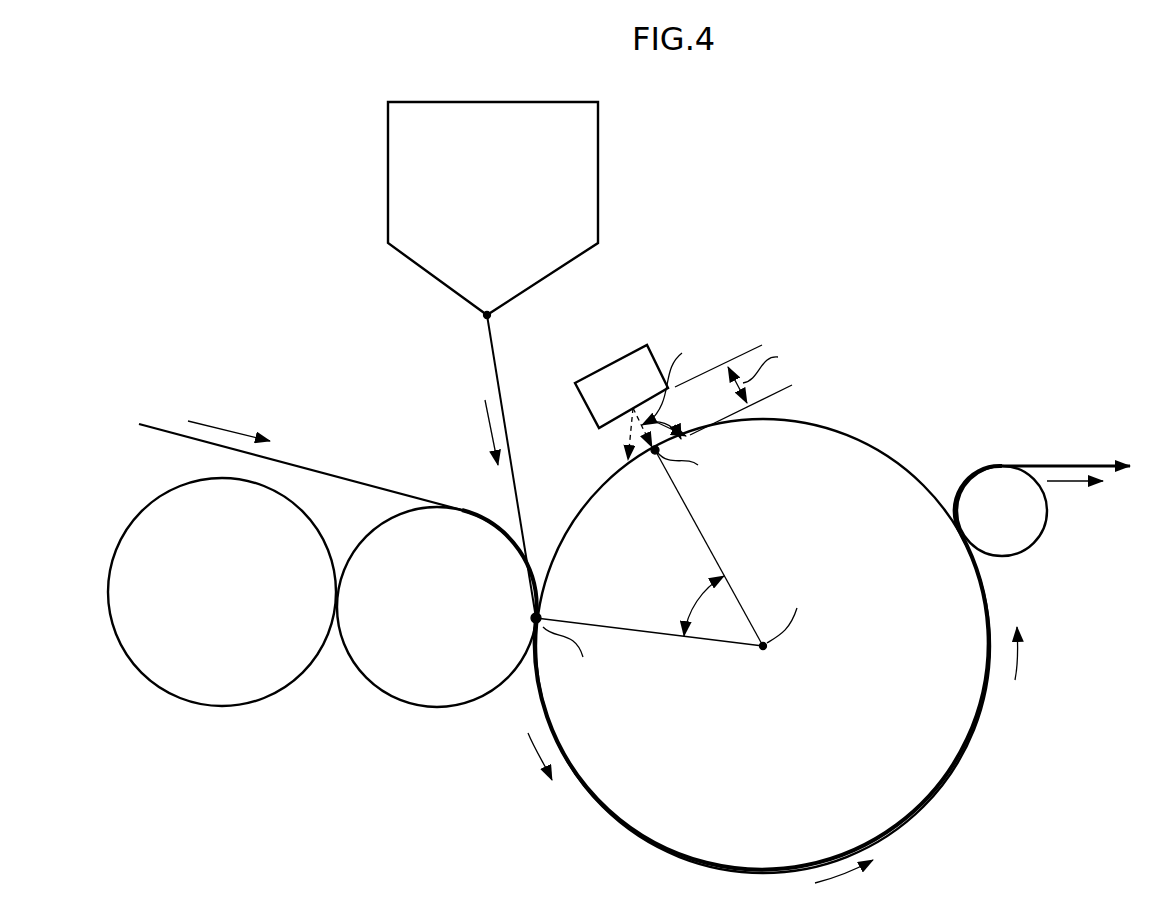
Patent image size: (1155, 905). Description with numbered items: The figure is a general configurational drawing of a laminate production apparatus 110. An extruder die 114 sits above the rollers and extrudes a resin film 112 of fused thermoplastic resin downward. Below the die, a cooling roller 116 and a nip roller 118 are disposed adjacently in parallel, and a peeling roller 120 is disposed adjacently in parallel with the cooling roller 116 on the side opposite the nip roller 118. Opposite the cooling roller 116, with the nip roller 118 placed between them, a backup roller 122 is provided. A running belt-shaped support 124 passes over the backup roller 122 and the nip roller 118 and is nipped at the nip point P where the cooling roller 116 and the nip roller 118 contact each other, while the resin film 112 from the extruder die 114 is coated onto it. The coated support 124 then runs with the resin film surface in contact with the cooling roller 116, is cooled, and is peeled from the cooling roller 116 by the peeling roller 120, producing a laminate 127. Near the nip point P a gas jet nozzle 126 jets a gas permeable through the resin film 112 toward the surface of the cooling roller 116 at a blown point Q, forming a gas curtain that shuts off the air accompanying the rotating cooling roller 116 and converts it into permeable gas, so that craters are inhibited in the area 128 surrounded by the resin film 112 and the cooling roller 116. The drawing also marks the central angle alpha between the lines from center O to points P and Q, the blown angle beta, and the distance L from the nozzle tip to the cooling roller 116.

The laminate production apparatus 110 is at (828, 257).
The resin film 112 is at (488, 342).
The extruder die 114 is at (598, 195).
The cooling roller 116 is at (837, 478).
The nip roller 118 is at (427, 692).
The peeling roller 120 is at (1033, 523).
The backup roller 122 is at (248, 692).
The belt-shaped support 124 is at (307, 465).
The gas jet nozzle 126 is at (607, 362).
The laminate 127 is at (1053, 465).
The area surrounded by the resin film and the cooling roller 128 is at (580, 503).